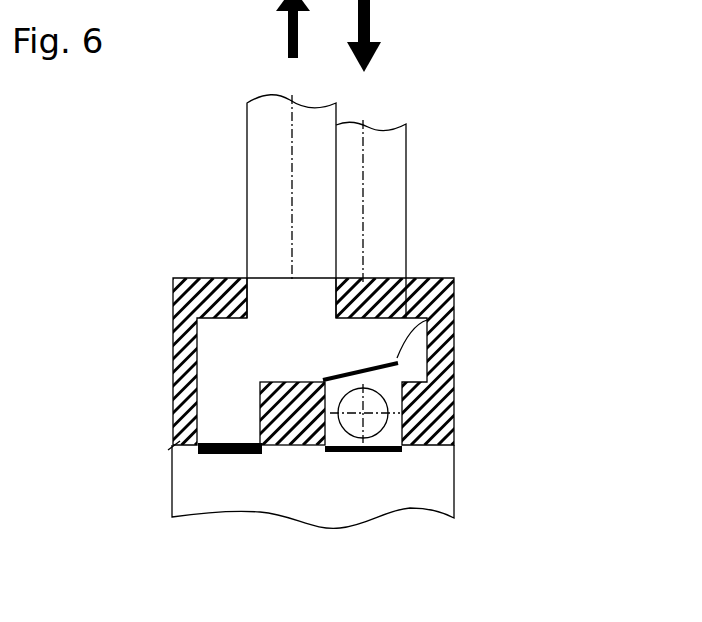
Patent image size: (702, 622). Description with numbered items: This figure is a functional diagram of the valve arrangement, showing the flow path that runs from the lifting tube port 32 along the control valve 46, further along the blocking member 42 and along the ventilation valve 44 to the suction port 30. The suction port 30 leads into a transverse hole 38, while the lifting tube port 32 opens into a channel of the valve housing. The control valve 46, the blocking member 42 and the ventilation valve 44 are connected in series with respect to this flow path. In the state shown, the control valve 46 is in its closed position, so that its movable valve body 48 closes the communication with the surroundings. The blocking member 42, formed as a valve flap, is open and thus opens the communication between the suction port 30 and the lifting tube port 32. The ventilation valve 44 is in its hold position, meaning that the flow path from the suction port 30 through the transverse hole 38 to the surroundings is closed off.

The suction port 30 is at (392, 210).
The lifting tube port 32 is at (283, 218).
The transverse hole 38 is at (377, 420).
The blocking member 42 is at (427, 320).
The ventilation valve 44 is at (357, 452).
The control valve 46 is at (172, 448).
The valve body 48 is at (227, 455).